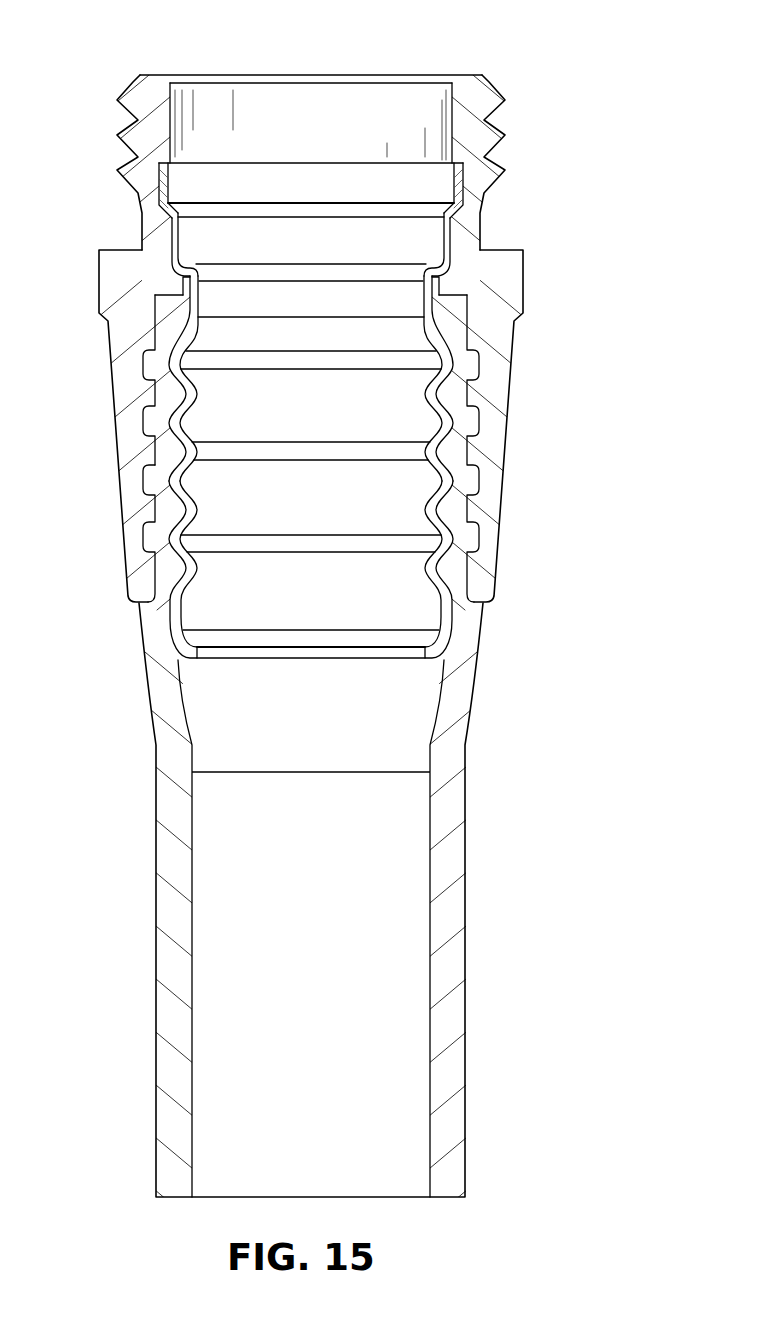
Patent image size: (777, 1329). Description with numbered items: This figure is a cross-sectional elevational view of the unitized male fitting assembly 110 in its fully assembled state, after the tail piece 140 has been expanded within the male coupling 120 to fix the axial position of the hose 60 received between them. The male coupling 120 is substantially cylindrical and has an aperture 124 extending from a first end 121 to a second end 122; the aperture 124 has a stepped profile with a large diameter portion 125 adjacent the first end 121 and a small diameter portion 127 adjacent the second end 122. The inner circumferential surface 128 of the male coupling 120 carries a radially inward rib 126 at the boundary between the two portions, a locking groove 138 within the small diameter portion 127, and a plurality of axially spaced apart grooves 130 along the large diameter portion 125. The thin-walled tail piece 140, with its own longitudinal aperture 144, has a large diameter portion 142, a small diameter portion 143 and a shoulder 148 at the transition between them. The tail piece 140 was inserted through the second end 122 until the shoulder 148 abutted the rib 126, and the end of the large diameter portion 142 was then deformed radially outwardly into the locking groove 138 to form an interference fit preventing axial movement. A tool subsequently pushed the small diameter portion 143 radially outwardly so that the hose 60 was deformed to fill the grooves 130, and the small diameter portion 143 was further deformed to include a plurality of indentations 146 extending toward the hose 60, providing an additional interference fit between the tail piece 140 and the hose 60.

The unitized male fitting assembly 110 is at (80, 83).
The male coupling 120 is at (519, 133).
The first end 121 is at (485, 602).
The second end 122 is at (470, 73).
The aperture 124 is at (365, 101).
The large diameter portion 125 is at (160, 318).
The rib 126 is at (190, 289).
The small diameter portion 127 is at (170, 115).
The inner circumferential surface 128 is at (160, 392).
The grooves 130 is at (468, 532).
The locking groove 138 is at (160, 178).
The tail piece 140 is at (467, 242).
The large diameter portion 142 is at (462, 175).
The small diameter portion 143 is at (440, 577).
The aperture 144 is at (328, 512).
The indentations 146 is at (442, 453).
The shoulder 148 is at (460, 283).
The hose 60 is at (445, 748).